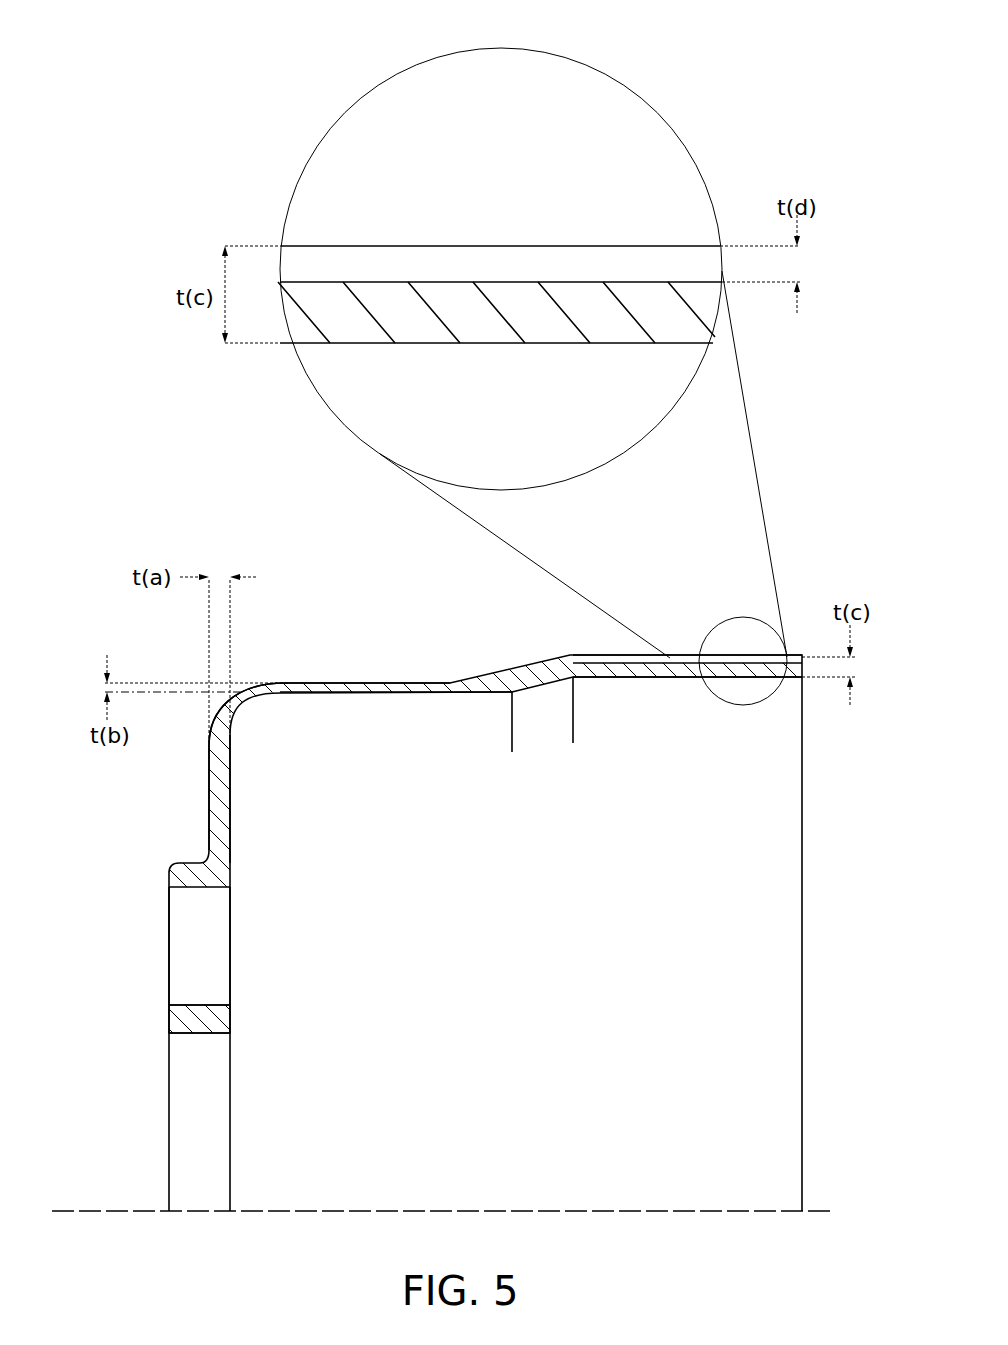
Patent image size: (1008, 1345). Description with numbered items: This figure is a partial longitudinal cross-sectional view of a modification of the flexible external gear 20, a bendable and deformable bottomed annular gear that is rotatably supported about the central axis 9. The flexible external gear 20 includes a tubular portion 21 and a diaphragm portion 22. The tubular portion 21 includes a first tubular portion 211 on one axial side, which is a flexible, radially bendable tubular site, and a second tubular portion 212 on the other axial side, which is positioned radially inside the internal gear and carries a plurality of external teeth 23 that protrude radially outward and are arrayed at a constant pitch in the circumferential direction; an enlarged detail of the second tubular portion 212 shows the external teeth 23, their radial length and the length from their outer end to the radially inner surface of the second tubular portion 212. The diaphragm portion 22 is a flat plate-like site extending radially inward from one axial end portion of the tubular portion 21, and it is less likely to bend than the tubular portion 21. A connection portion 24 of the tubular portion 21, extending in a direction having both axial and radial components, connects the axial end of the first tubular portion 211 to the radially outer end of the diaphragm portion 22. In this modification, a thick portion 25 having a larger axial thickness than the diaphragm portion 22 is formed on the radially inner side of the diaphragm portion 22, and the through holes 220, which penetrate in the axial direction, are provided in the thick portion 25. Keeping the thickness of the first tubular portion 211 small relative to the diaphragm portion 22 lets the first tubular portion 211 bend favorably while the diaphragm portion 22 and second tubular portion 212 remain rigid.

The central axis 9 is at (76, 1208).
The flexible external gear 20 is at (490, 668).
The tubular portion 21 is at (541, 763).
The first tubular portion 211 is at (407, 693).
The second tubular portion 212 is at (687, 736).
The diaphragm portion 22 is at (231, 798).
The through hole 220 is at (212, 944).
The external teeth 23 is at (383, 262).
The connection portion 24 is at (243, 703).
The thick portion 25 is at (231, 1024).